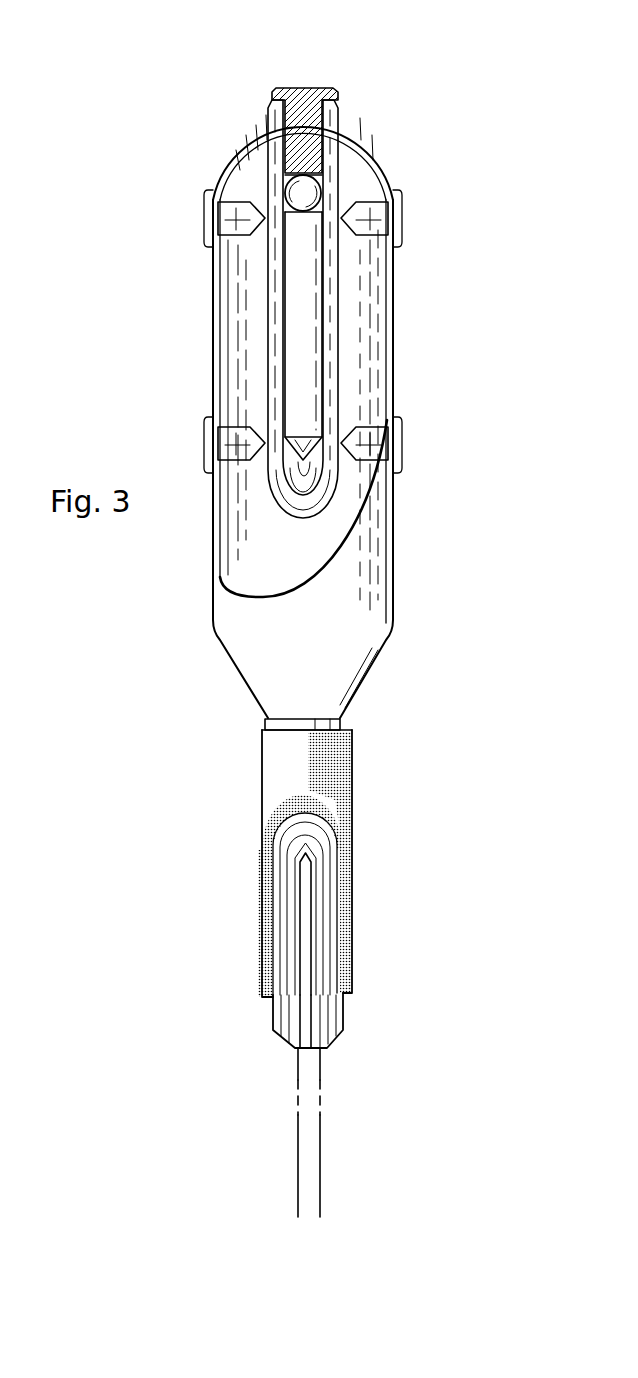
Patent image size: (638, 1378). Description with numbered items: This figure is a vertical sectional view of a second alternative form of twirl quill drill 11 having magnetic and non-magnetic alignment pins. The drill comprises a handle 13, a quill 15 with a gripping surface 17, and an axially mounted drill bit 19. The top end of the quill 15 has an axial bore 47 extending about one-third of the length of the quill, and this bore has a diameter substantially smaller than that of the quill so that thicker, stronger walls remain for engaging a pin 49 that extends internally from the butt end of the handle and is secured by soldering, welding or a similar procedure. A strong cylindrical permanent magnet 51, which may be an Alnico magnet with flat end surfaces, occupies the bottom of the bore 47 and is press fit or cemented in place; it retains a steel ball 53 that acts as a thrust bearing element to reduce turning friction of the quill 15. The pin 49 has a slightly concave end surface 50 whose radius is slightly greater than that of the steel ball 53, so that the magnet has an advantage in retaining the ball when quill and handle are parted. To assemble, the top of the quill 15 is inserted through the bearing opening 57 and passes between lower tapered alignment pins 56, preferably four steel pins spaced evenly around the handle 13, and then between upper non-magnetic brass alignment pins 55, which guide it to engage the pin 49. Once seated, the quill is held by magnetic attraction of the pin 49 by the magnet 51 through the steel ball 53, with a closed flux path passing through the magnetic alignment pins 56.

The twirl quill drill 11 is at (405, 527).
The handle 13 is at (393, 325).
The quill 15 is at (340, 725).
The gripping surface 17 is at (352, 787).
The drill bit 19 is at (320, 1070).
The axial bore 47 is at (328, 210).
The pin 49 is at (315, 88).
The concave end surface 50 is at (296, 180).
The permanent magnet 51 is at (283, 323).
The steel ball 53 is at (321, 180).
The alignment pins 55 is at (238, 197).
The alignment pins 56 is at (247, 430).
The bearing opening 57 is at (300, 720).